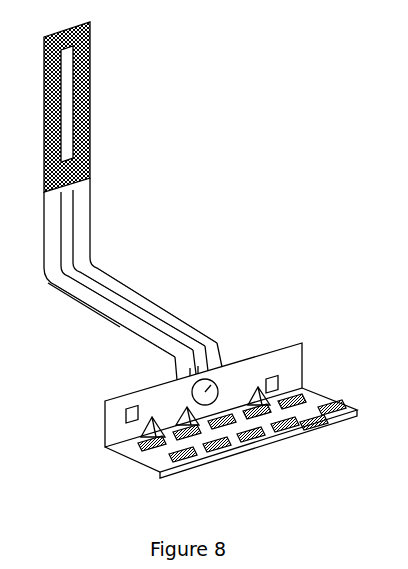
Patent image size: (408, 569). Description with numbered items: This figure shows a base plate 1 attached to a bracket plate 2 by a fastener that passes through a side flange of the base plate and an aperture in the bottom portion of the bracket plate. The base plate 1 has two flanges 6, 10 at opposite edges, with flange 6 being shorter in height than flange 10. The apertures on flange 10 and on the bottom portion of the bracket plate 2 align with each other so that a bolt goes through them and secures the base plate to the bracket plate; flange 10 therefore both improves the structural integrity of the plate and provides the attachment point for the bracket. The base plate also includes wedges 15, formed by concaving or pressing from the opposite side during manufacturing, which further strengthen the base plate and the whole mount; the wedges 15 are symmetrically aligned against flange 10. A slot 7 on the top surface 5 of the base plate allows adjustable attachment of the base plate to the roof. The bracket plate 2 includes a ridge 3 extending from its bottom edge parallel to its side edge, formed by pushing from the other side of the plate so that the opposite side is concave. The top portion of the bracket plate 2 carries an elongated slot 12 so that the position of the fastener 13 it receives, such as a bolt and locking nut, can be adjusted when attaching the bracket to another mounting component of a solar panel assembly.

The plate 1 is at (288, 446).
The bracket plate 2 is at (103, 238).
The ridge 3 is at (152, 303).
The top surface 5 is at (318, 400).
The flange 6 is at (225, 456).
The slot 7 is at (137, 446).
The flange 10 is at (250, 372).
The slot 12 is at (90, 103).
The fastener 13 is at (173, 380).
The wedge 15 is at (150, 438).